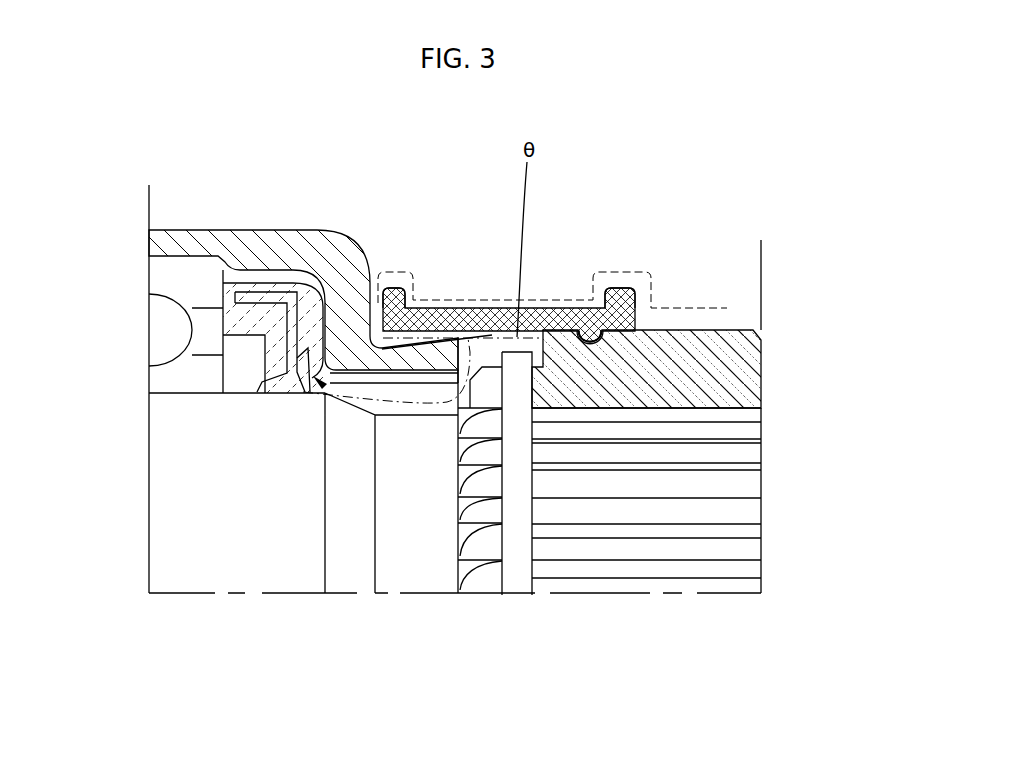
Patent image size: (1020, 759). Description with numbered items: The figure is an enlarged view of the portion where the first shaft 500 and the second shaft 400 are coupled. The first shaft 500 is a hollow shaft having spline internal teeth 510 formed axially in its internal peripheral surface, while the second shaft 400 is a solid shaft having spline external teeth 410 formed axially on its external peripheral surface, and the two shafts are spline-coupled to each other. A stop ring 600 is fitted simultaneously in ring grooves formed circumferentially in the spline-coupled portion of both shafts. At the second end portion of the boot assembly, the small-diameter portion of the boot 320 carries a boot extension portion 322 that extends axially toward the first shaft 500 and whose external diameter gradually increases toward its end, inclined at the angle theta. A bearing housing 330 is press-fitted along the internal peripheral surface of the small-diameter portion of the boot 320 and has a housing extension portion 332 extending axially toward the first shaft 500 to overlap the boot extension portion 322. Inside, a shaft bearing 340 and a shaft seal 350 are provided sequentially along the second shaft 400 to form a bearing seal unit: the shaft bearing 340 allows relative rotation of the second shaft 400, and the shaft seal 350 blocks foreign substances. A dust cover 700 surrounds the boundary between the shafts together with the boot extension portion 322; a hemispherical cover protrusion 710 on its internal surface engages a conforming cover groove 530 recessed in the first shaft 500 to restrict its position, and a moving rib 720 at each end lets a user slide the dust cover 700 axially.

The boot 320 is at (344, 263).
The boot extension portion 322 is at (435, 362).
The bearing housing 330 is at (294, 280).
The housing extension portion 332 is at (466, 352).
The shaft bearing 340 is at (163, 380).
The shaft seal 350 is at (248, 320).
The second shaft 400 is at (400, 545).
The spline external teeth 410 is at (722, 513).
The first shaft 500 is at (712, 387).
The spline internal teeth 510 is at (702, 410).
The cover groove 530 is at (602, 360).
The stop ring 600 is at (513, 573).
The dust cover 700 is at (552, 320).
The cover protrusion 710 is at (605, 328).
The moving rib 720 is at (400, 287).